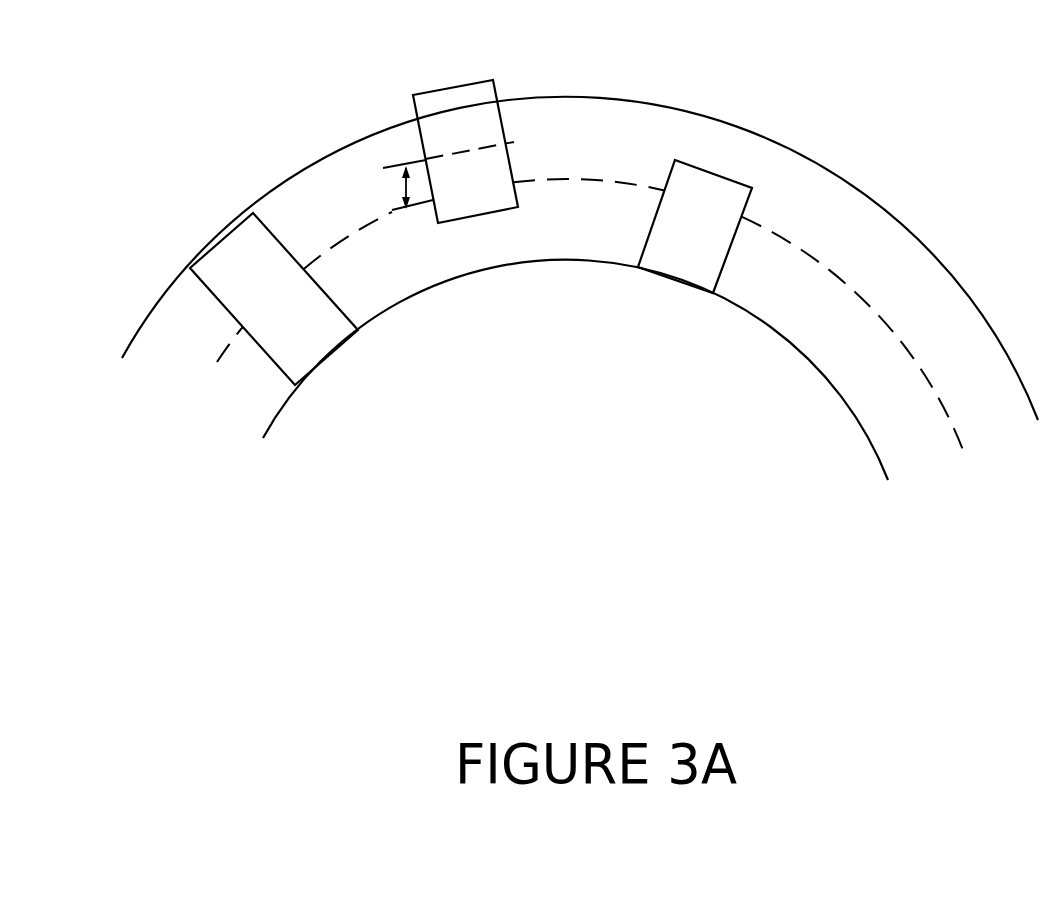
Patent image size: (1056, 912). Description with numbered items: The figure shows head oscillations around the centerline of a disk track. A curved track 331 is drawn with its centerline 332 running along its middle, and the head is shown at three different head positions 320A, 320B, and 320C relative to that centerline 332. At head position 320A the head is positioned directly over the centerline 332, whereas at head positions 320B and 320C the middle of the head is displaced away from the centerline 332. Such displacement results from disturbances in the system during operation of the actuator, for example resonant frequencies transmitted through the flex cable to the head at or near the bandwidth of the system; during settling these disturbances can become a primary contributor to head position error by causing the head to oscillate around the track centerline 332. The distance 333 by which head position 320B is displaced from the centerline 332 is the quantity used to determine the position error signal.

The track 331 is at (135, 332).
The centerline 332 is at (195, 395).
The distance 333 is at (402, 185).
The head position 320A is at (235, 242).
The head position 320B is at (485, 97).
The head position 320C is at (720, 173).